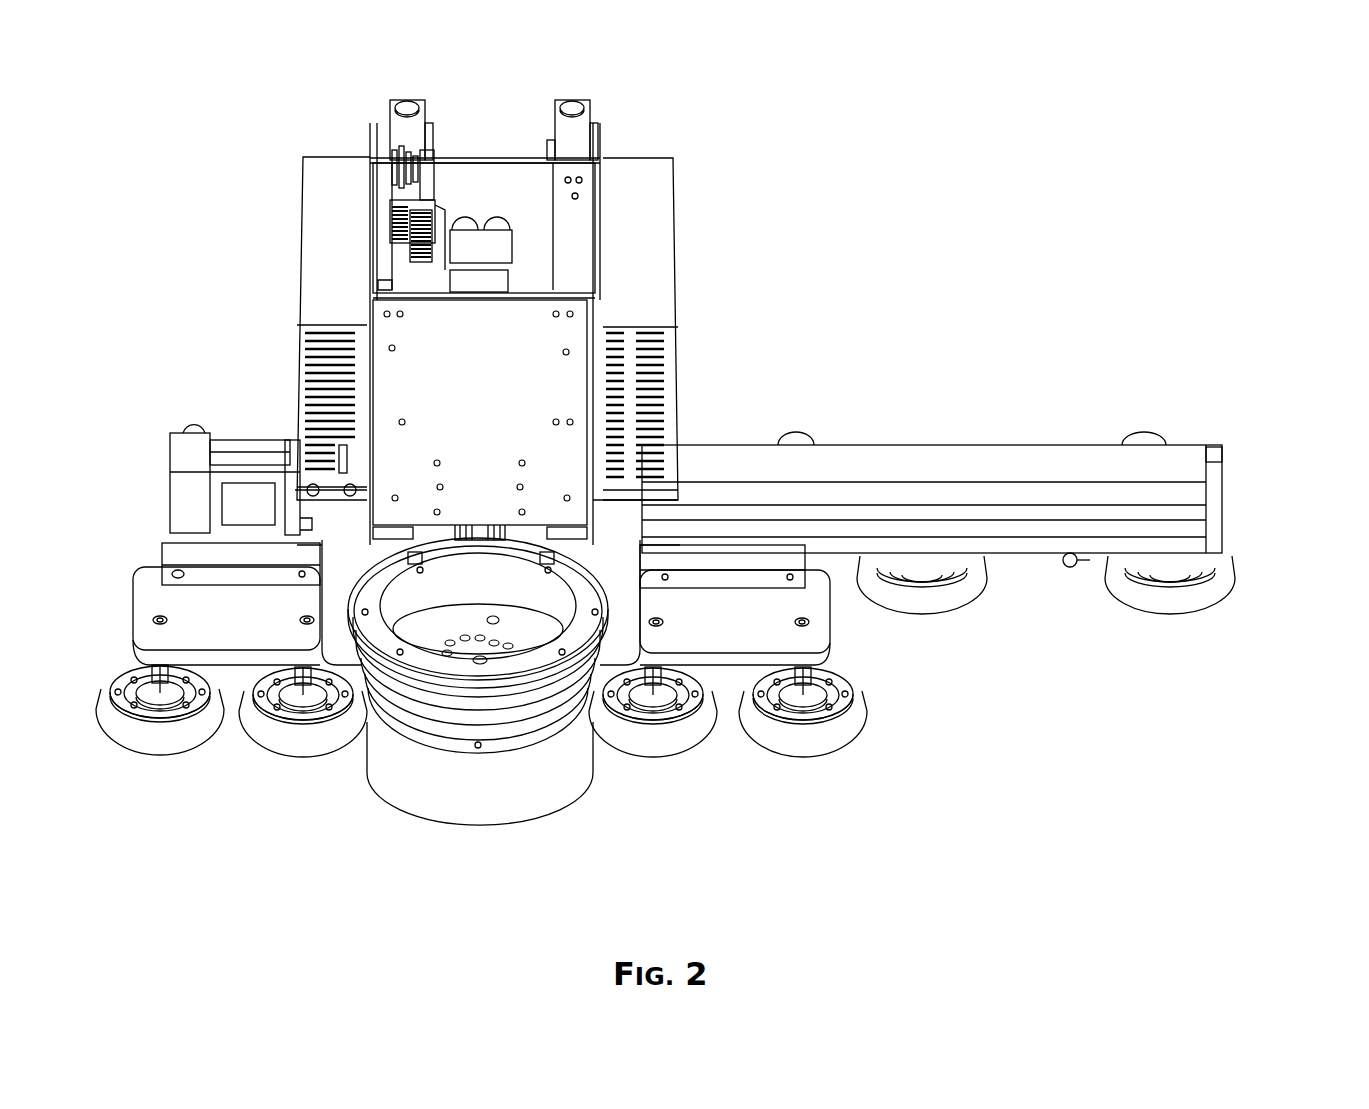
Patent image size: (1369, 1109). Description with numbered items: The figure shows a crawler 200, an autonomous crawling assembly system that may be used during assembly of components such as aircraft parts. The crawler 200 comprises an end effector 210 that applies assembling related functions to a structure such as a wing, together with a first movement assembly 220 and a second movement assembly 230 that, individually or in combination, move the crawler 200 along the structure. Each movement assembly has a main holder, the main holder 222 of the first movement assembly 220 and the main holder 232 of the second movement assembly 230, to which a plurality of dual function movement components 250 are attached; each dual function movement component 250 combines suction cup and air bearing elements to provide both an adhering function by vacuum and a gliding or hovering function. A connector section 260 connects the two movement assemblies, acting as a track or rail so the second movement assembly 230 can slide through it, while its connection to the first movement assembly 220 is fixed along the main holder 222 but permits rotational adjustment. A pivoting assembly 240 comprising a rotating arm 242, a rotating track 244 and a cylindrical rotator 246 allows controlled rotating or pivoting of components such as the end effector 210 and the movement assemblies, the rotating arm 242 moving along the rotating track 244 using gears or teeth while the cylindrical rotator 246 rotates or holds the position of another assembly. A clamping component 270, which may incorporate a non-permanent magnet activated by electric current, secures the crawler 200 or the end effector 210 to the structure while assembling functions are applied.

The crawler 200 is at (180, 161).
The end effector 210 is at (505, 186).
The first movement assembly 220 is at (846, 622).
The main holder 222 is at (708, 638).
The second movement assembly 230 is at (1066, 428).
The main holder 232 is at (900, 452).
The pivoting assembly 240 is at (423, 642).
The rotating arm 242 is at (485, 521).
The rotating track 244 is at (490, 553).
The cylindrical rotator 246 is at (377, 638).
The dual function movement component 250 is at (840, 747).
The connector section 260 is at (623, 555).
The clamping component 270 is at (508, 808).